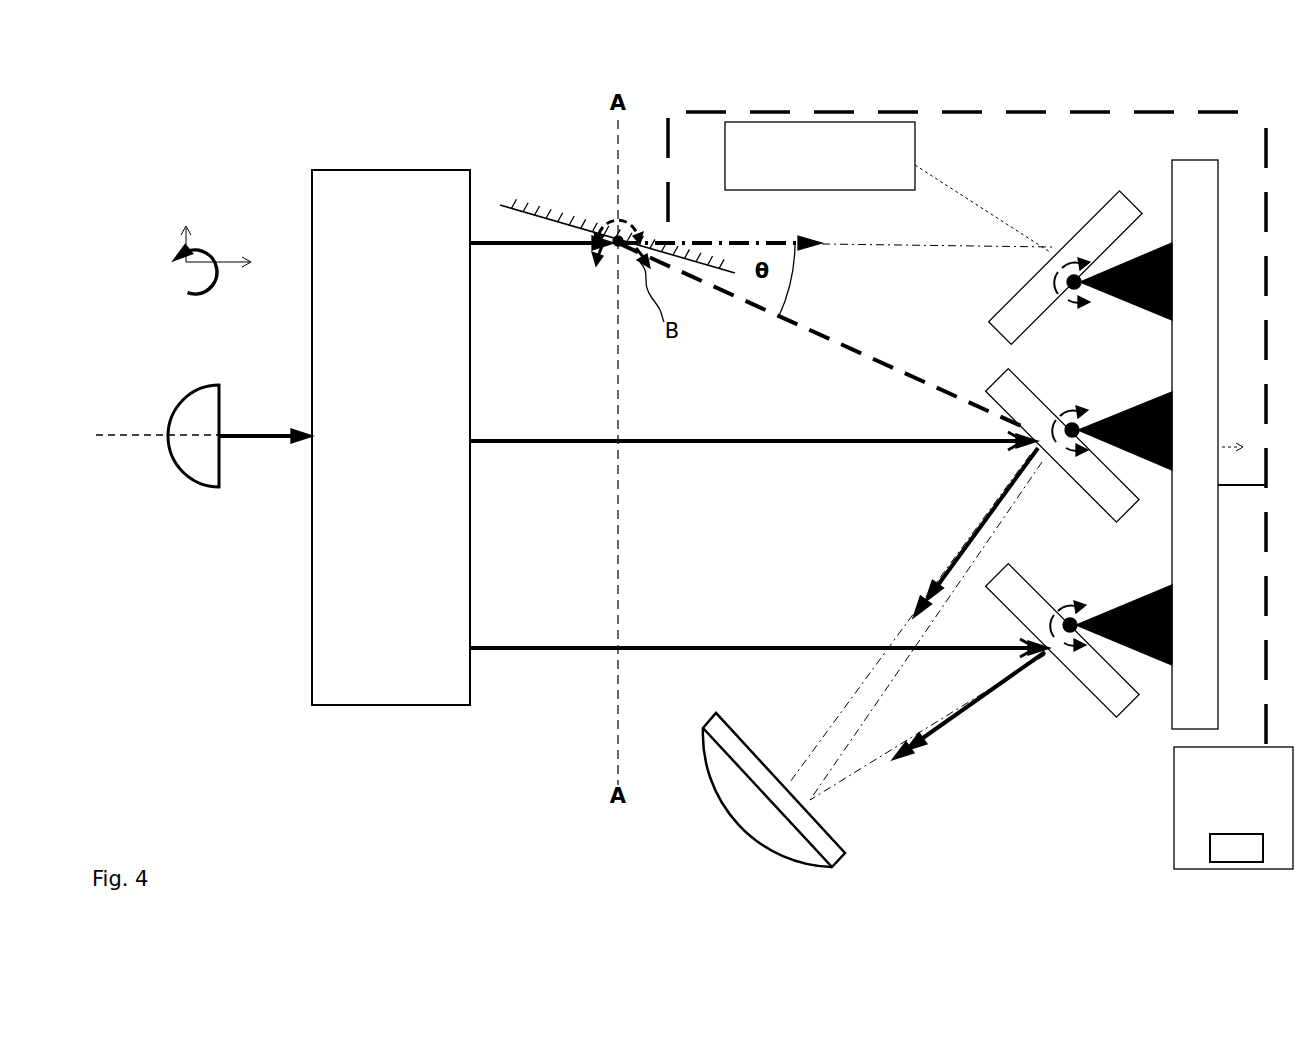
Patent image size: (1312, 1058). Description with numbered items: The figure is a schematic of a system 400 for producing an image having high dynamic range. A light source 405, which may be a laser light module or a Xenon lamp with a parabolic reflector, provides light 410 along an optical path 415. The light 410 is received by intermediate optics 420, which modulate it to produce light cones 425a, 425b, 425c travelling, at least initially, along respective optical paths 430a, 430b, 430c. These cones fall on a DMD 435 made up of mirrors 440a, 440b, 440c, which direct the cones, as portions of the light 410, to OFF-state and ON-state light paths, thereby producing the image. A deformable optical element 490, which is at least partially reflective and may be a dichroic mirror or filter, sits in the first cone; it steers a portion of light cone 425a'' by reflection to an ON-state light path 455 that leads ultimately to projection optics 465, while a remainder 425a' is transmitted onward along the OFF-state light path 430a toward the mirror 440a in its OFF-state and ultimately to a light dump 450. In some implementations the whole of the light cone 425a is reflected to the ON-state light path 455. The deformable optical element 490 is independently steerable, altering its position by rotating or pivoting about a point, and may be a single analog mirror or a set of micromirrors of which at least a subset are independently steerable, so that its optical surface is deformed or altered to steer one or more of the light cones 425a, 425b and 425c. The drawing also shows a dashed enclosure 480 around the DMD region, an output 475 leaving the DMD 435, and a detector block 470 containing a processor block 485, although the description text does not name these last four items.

The system 400 is at (237, 118).
The light source 405 is at (192, 492).
The light 410 is at (268, 448).
The optical path 415 is at (112, 432).
The intermediate optics 420 is at (373, 440).
The light cone 425a is at (542, 280).
The remainder 425a' is at (835, 220).
The portion of light cone 425a'' is at (824, 336).
The light cone 425b is at (536, 440).
The light cone 425c is at (516, 628).
The optical path 430a is at (918, 258).
The optical path 430b is at (822, 734).
The optical path 430c is at (870, 790).
The DMD 435 is at (1177, 447).
The mirror 440a is at (1070, 230).
The mirror 440b is at (1038, 392).
The mirror 440c is at (1032, 588).
The light dump 450 is at (800, 167).
The ON-state light path 455 is at (848, 765).
The projection optics 465 is at (745, 812).
The detector 470 is at (1216, 822).
The output 475 is at (1243, 500).
The housing 480 is at (1070, 113).
The processor 485 is at (1220, 860).
The deformable optical element 490 is at (566, 212).